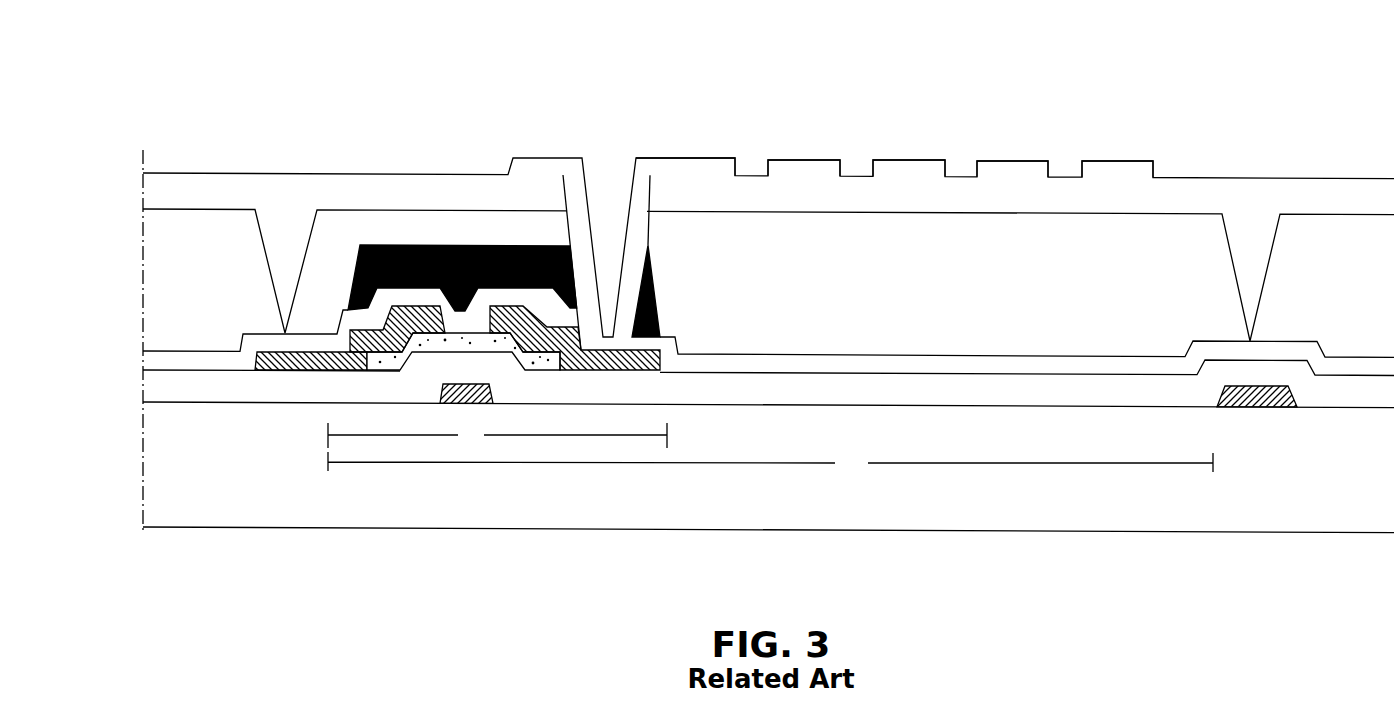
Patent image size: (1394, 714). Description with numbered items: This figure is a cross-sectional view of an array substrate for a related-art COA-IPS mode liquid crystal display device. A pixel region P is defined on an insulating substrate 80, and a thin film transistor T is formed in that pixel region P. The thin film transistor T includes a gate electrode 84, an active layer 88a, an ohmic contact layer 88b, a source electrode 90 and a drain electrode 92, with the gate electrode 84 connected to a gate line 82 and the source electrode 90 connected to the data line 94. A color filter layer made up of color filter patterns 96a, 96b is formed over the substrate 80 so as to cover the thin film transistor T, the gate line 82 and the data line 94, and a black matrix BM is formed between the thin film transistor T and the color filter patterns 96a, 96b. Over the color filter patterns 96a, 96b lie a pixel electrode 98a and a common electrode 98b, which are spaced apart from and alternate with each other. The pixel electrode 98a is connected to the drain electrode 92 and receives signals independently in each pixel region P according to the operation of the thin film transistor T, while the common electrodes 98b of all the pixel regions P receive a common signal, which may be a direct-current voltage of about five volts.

The insulating substrate 80 is at (1321, 508).
The gate line 82 is at (1256, 398).
The gate electrode 84 is at (466, 400).
The active layer 88a is at (530, 312).
The ohmic contact layer 88b is at (427, 305).
The source electrode 90 is at (352, 265).
The drain electrode 92 is at (502, 335).
The data line 94 is at (283, 352).
The red color filter pattern 96a is at (1078, 235).
The green color filter pattern 96b is at (178, 253).
The pixel electrode 98a is at (645, 165).
The common electrode 98b is at (815, 160).
The black matrix BM is at (657, 307).
The thin film transistor T is at (497, 435).
The pixel region P is at (770, 463).